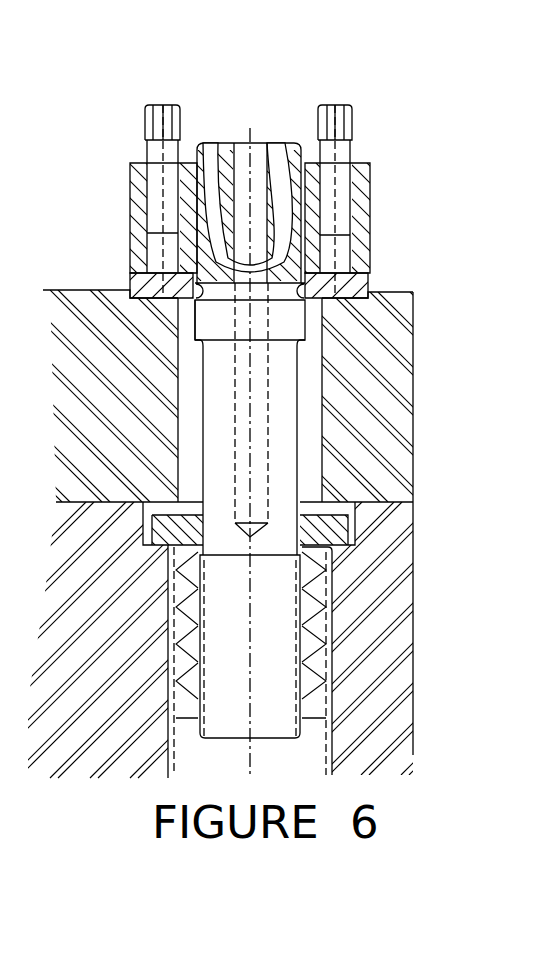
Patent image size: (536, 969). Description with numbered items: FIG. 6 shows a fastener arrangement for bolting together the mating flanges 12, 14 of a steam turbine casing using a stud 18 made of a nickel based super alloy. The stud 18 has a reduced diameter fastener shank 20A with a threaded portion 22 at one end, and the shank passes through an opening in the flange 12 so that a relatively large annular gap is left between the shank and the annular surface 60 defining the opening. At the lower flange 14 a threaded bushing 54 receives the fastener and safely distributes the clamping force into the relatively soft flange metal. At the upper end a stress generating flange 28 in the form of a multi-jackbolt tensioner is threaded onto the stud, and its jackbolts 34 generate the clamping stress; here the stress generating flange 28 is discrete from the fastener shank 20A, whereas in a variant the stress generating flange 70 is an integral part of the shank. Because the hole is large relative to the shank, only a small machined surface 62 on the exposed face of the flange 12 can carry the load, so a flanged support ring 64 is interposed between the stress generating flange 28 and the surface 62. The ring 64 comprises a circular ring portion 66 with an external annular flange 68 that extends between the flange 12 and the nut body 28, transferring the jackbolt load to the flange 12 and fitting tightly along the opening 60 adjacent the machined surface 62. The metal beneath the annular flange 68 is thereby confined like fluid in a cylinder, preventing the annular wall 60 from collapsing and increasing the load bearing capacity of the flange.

The flange 12 is at (413, 397).
The flange 14 is at (413, 533).
The stud 18 is at (275, 143).
The fastener shank 20A is at (299, 417).
The threaded portion 22 is at (240, 665).
The stress generating flange 28 is at (368, 210).
The bolt 34 is at (162, 102).
The threaded bushing 54 is at (334, 623).
The annular surface 60 is at (178, 443).
The machined surface 62 is at (367, 293).
The flanged support ring 64 is at (368, 275).
The circular ring portion 66 is at (197, 318).
The external annular flange 68 is at (132, 276).
The stress generating flange 70 is at (298, 331).